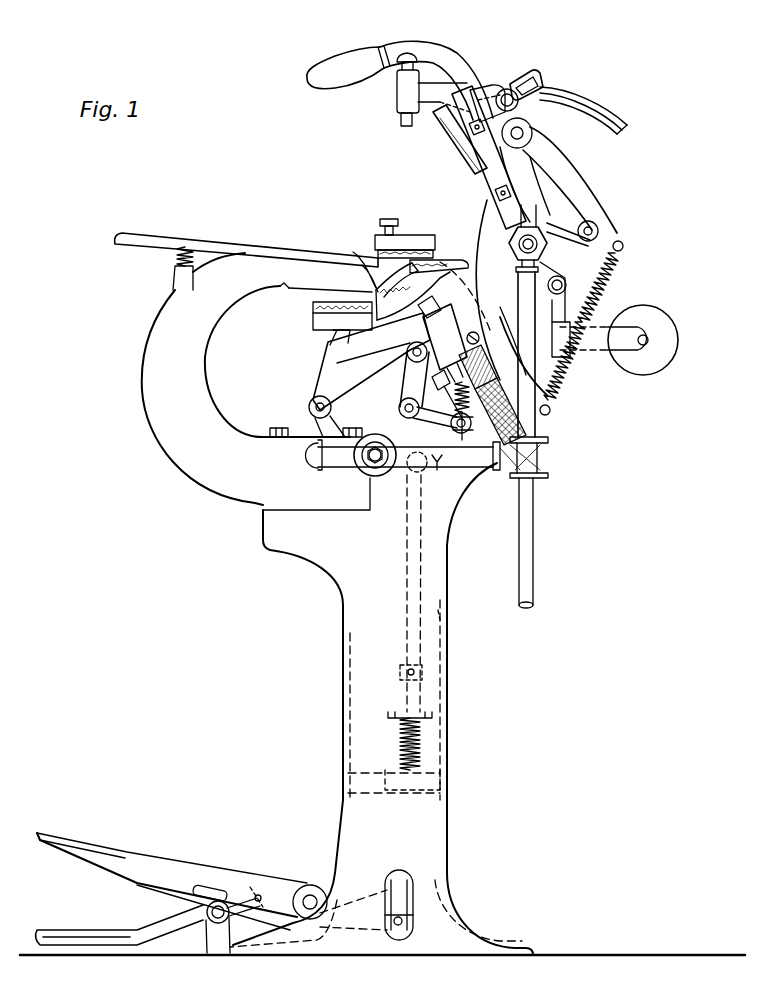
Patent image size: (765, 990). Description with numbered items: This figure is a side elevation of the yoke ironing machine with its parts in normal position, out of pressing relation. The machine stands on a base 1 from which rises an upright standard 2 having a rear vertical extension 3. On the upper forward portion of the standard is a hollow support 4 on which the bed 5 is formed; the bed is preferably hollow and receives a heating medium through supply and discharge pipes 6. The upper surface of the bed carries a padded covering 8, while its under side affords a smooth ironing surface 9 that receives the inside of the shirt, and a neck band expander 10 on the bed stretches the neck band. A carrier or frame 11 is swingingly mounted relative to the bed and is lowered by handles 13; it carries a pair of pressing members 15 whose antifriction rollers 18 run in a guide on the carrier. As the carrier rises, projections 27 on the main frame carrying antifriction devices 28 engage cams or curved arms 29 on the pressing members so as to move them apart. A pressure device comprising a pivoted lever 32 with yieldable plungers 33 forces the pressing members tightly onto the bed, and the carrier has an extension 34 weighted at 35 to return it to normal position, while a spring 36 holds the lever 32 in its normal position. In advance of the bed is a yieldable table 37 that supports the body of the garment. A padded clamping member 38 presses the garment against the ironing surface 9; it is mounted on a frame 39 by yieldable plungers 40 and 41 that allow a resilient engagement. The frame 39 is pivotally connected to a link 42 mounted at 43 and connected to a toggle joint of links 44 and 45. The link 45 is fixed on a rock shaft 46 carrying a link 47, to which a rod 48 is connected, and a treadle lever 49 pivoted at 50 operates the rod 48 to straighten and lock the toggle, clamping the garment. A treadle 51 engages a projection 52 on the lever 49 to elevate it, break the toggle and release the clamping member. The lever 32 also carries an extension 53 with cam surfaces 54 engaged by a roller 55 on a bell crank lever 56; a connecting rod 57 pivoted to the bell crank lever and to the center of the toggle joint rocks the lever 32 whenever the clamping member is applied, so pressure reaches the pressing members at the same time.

The base 1 is at (493, 938).
The upright portion or standard 2 is at (433, 730).
The rear vertical extension 3 is at (555, 395).
The hollow support 4 is at (168, 437).
The bed 5 is at (403, 257).
The supply and discharge pipes 6 is at (346, 462).
The padded covering 8 is at (418, 283).
The ironing surface 9 is at (373, 257).
The neck band expander 10 is at (400, 232).
The carrier or frame 11 is at (507, 230).
The handles 13 is at (343, 60).
The pressing member 15 is at (453, 123).
The antifriction rollers 18 is at (535, 73).
The projections 27 is at (506, 88).
The antifriction devices 28 is at (487, 87).
The cams or curved arms 29 is at (620, 124).
The pivoted lever 32 is at (432, 88).
The yieldable plungers 33 is at (400, 118).
The extension 34 is at (570, 368).
The weight 35 is at (670, 340).
The spring 36 is at (605, 287).
The yieldable table or surface 37 is at (228, 242).
The padded clamping member 38 is at (437, 260).
The frame 39 is at (343, 365).
The yieldable plunger 40 is at (330, 343).
The yieldable plunger 41 is at (447, 303).
The link 42 is at (397, 392).
The mounting 43 is at (308, 407).
The toggle link 44 is at (405, 412).
The toggle link 45 is at (388, 470).
The rock shaft 46 is at (490, 470).
The link 47 is at (435, 457).
The rod 48 is at (413, 607).
The treadle lever 49 is at (188, 868).
The pivot 50 is at (310, 894).
The treadle 51 is at (90, 940).
The projection 52 is at (258, 885).
The extension 53 is at (583, 177).
The cam surfaces 54 is at (565, 197).
The roller 55 is at (624, 241).
The bell crank lever 56 is at (605, 217).
The connecting rod 57 is at (475, 342).